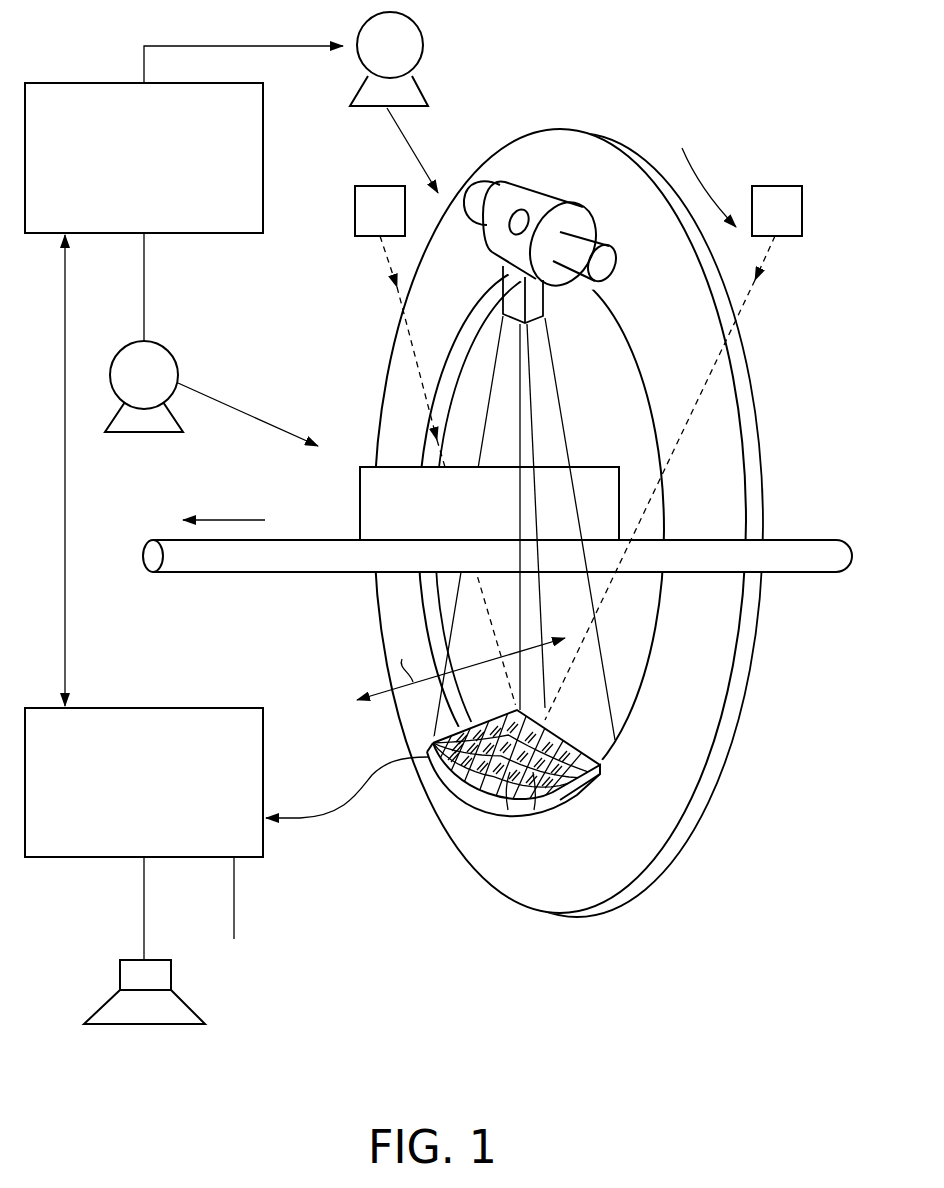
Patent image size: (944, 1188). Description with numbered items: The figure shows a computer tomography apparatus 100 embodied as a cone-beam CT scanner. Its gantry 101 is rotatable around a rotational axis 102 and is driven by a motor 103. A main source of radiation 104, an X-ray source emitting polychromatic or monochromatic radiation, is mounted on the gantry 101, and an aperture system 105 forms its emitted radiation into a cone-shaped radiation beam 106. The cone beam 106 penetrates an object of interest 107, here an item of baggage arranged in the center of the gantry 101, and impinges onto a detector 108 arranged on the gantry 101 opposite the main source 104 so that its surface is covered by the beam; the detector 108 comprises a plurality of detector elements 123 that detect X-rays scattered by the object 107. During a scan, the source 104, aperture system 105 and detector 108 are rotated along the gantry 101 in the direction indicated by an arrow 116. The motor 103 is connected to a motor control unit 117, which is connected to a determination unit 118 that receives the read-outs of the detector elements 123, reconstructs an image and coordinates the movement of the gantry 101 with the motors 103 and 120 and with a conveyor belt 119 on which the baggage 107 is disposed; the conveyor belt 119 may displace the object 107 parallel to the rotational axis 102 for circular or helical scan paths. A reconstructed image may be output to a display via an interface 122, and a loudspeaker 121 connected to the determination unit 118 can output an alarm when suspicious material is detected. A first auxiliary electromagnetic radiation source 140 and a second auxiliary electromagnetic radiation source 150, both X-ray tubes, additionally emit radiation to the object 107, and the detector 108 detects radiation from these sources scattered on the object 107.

The computer tomography apparatus 100 is at (724, 50).
The gantry 101 is at (720, 690).
The rotational axis 102 is at (233, 518).
The motor 103 is at (423, 38).
The main source of radiation 104 is at (556, 198).
The aperture system 105 is at (512, 295).
The cone-shaped radiation beam 106 is at (560, 421).
The object of interest 107 is at (360, 500).
The detector 108 is at (477, 813).
The arrow 116 is at (707, 178).
The motor control unit 117 is at (78, 83).
The determination unit 118 is at (173, 708).
The conveyor belt 119 is at (818, 547).
The motor 120 is at (178, 368).
The loudspeaker 121 is at (142, 1027).
The interface 122 is at (234, 898).
The detector elements 123 is at (534, 810).
The first auxiliary electromagnetic radiation source 140 is at (369, 236).
The second auxiliary electromagnetic radiation source 150 is at (787, 236).